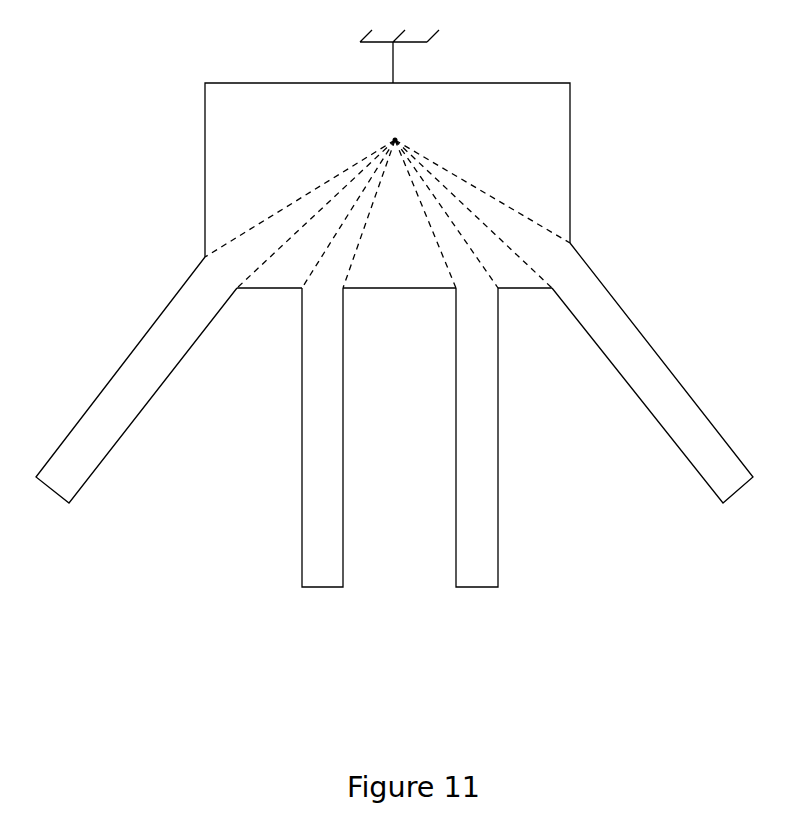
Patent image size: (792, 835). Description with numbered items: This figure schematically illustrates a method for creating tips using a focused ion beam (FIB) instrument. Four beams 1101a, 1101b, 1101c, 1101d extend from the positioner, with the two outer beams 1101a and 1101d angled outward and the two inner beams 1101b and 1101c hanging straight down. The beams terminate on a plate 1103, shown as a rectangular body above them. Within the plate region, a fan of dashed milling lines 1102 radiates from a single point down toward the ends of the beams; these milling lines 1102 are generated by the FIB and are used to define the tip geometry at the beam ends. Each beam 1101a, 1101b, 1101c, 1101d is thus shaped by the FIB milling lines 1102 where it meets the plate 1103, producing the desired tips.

The housing 1103 is at (205, 108).
The milling lines 1102 is at (488, 178).
The positioner beam 1101a is at (92, 508).
The positioner beam 1101b is at (322, 597).
The positioner beam 1101c is at (478, 597).
The positioner beam 1101d is at (692, 508).